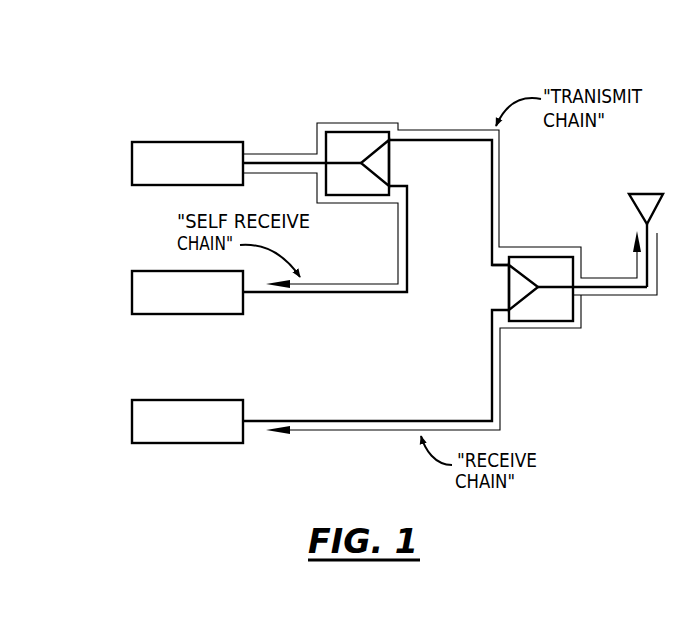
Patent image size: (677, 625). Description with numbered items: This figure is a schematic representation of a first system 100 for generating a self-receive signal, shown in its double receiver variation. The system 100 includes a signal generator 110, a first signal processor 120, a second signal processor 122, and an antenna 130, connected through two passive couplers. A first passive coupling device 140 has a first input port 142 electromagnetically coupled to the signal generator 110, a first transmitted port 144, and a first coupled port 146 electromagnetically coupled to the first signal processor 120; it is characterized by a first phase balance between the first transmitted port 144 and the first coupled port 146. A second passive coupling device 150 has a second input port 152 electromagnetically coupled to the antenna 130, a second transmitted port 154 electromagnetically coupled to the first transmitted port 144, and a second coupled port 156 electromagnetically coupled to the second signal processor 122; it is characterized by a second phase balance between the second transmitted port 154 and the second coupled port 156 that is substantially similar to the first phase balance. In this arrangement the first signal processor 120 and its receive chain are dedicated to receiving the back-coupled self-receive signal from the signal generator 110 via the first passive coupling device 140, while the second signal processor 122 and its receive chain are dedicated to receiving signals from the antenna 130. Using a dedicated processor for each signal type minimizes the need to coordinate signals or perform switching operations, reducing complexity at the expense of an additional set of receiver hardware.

The first system 100 is at (155, 103).
The signal generator 110 is at (158, 187).
The first signal processor 120 is at (158, 270).
The second signal processor 122 is at (147, 400).
The antenna 130 is at (643, 194).
The first passive coupling device 140 is at (357, 132).
The first input port 142 is at (327, 162).
The first transmitted port 144 is at (389, 141).
The first coupled port 146 is at (390, 187).
The second passive coupling device 150 is at (548, 257).
The second input port 152 is at (573, 288).
The second transmitted port 154 is at (509, 265).
The second coupled port 156 is at (510, 309).